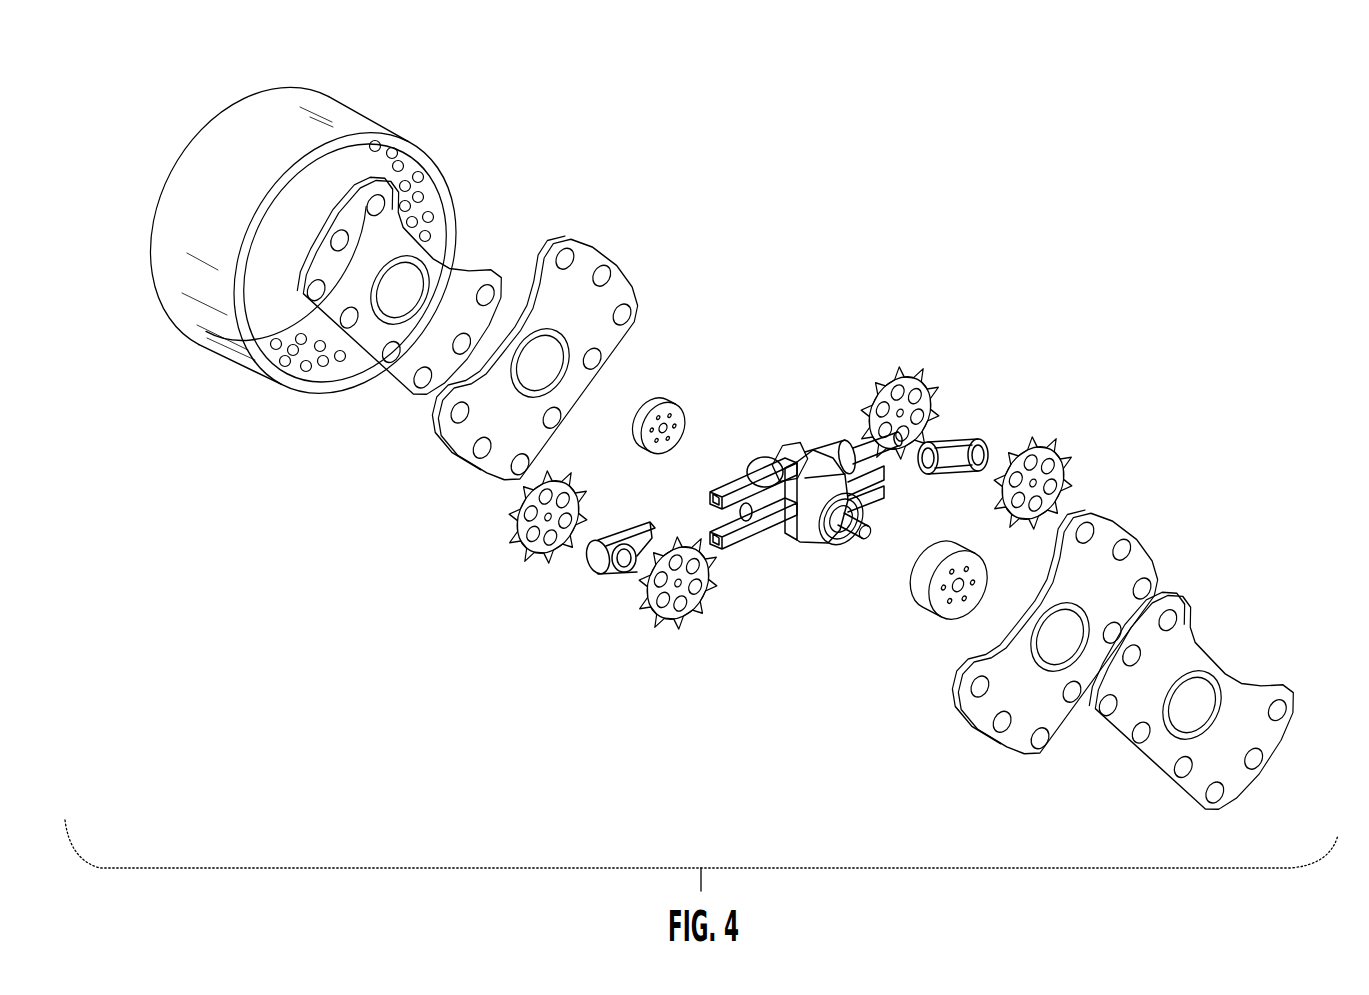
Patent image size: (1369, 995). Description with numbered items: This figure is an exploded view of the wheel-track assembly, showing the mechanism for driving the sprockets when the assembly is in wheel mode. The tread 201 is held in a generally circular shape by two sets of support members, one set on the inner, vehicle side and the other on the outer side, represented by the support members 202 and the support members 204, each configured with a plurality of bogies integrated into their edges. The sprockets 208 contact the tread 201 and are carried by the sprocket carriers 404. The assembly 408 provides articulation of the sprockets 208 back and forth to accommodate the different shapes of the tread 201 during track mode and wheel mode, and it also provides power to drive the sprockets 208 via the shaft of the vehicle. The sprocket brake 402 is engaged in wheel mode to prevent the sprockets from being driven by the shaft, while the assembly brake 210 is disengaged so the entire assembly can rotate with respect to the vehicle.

The tread 201 is at (343, 117).
The support member 202 is at (355, 333).
The support member 204 is at (463, 430).
The sprocket 208 is at (522, 555).
The assembly brake 210 is at (922, 607).
The sprocket brake 402 is at (665, 403).
The sprocket carrier 404 is at (597, 563).
The assembly 408 is at (815, 443).